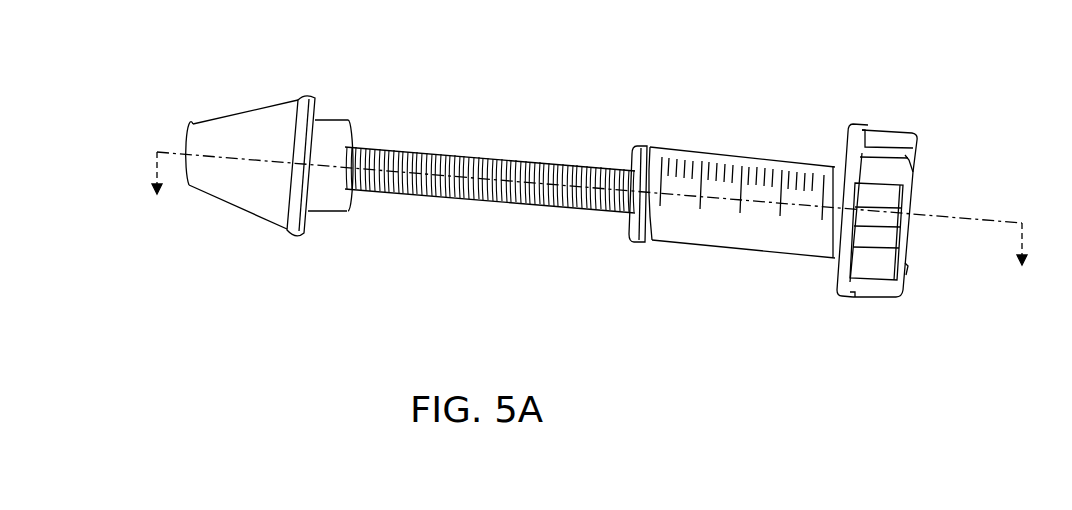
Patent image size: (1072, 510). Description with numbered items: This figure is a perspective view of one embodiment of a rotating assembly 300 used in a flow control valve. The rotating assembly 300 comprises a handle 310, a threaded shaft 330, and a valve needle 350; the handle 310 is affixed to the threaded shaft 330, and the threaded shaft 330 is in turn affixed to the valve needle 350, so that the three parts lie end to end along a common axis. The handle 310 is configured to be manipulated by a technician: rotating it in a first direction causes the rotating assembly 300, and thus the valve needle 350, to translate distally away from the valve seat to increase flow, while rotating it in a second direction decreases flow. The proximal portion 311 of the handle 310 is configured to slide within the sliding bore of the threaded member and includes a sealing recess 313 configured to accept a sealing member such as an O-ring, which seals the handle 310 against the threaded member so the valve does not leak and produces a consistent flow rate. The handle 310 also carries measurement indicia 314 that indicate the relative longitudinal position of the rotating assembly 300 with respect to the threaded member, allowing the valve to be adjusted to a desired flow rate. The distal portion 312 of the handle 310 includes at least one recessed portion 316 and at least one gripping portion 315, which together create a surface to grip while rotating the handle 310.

The rotating assembly 300 is at (277, 319).
The handle 310 is at (859, 109).
The proximal portion 311 is at (708, 262).
The distal portion 312 is at (870, 312).
The sealing recess 313 is at (652, 149).
The measurement indicia 314 is at (765, 151).
The gripping portion 315 is at (891, 177).
The recessed portion 316 is at (881, 235).
The threaded shaft 330 is at (477, 156).
The valve needle 350 is at (230, 112).